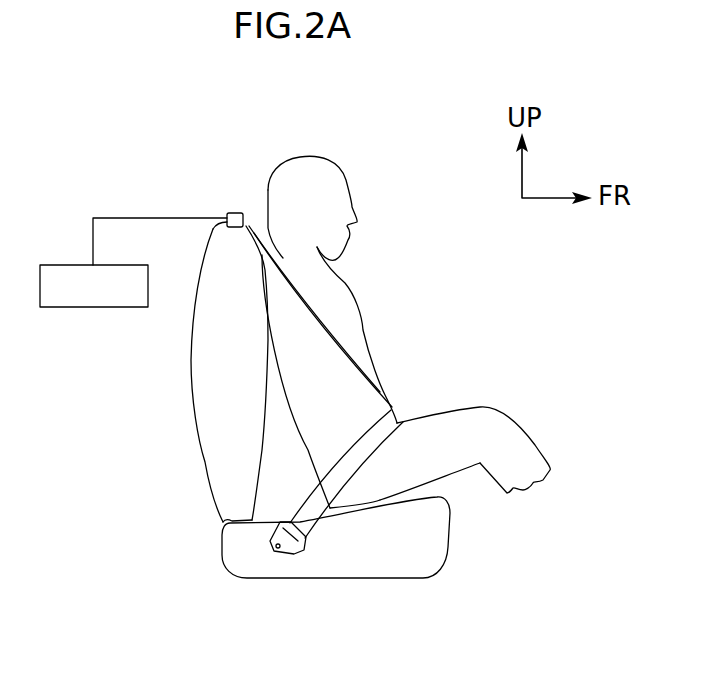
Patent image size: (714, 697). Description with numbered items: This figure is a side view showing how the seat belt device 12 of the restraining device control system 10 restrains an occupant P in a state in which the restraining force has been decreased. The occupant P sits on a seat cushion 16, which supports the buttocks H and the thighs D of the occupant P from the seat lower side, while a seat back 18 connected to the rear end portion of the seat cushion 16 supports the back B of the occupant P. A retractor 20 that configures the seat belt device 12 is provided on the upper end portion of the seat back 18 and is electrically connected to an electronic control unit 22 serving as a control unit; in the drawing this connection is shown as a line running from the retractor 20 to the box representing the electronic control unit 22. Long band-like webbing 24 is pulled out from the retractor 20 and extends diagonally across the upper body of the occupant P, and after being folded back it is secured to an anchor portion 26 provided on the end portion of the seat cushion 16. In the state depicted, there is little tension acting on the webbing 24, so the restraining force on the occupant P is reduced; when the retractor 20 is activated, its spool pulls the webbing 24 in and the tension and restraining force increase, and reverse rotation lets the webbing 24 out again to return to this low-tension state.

The restraining device control system 10 is at (161, 174).
The seat belt device 12 is at (255, 184).
The seat cushion 16 is at (383, 580).
The seat back 18 is at (202, 452).
The retractor 20 is at (232, 212).
The electronic control unit (ECU) 22 is at (93, 308).
The webbing 24 is at (353, 347).
The anchor portion 26 is at (297, 556).
The occupant P is at (343, 175).
The back B is at (292, 397).
The thighs D is at (428, 430).
The buttocks H is at (362, 512).